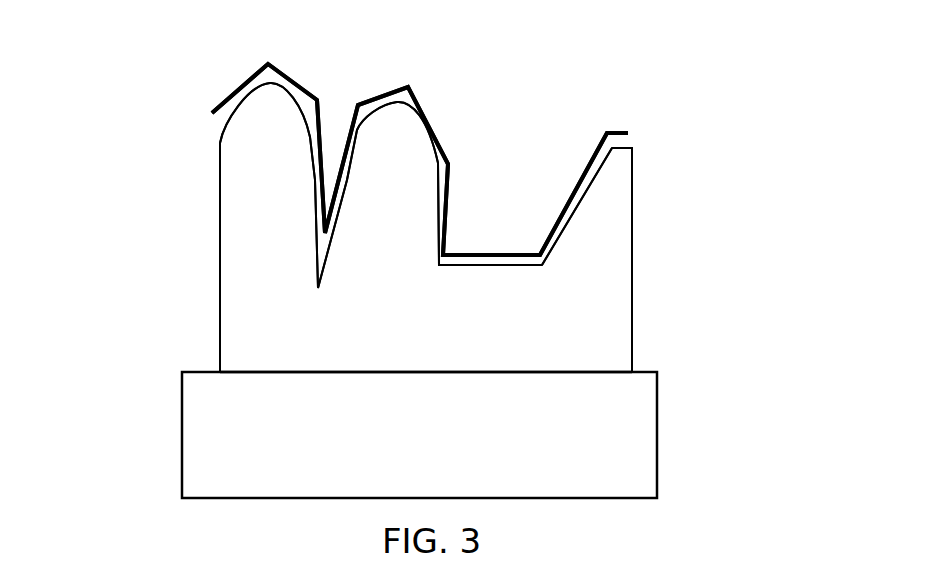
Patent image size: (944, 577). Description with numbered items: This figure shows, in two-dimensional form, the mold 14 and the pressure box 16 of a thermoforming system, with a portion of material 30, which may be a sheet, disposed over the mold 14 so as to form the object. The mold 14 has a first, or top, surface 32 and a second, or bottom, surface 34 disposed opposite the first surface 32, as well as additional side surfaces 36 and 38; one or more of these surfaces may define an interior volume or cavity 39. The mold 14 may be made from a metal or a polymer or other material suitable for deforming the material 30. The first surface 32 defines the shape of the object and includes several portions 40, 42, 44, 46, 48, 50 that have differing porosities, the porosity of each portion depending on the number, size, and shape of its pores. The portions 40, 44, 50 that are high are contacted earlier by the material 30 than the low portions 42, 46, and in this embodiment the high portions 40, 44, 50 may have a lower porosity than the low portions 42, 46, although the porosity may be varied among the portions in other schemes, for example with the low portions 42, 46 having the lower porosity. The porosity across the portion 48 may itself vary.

The mold 14 is at (220, 286).
The pressure box 16 is at (182, 440).
The material 30 is at (228, 92).
The first surface 32 is at (648, 67).
The second surface 34 is at (416, 360).
The side surface 36 is at (168, 238).
The side surface 38 is at (653, 286).
The cavity 39 is at (513, 322).
The portion 40 is at (270, 124).
The portion 42 is at (318, 309).
The portion 44 is at (393, 135).
The portion 46 is at (458, 284).
The portion 48 is at (576, 236).
The portion 50 is at (615, 172).